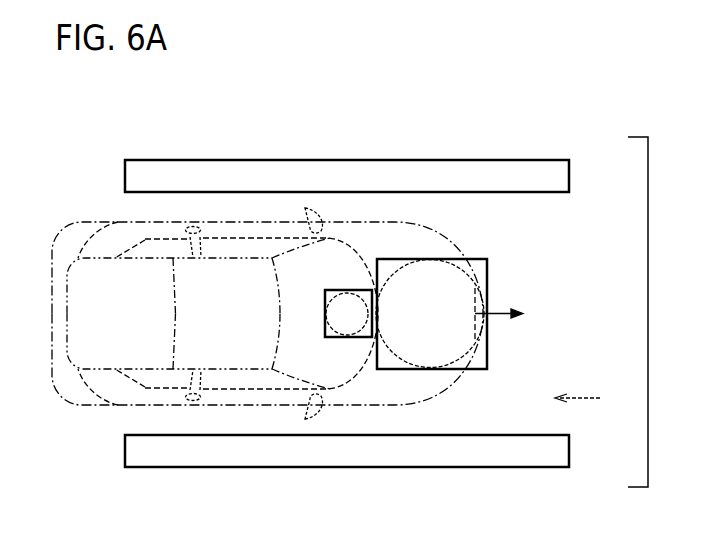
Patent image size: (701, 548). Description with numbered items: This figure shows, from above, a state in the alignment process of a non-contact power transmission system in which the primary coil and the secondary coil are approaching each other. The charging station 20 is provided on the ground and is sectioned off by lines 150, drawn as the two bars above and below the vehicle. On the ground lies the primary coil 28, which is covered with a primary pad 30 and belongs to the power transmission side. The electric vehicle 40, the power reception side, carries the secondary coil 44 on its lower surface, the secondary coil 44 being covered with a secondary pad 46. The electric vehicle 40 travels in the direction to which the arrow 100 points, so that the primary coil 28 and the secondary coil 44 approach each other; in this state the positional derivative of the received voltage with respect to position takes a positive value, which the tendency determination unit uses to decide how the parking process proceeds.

The charging station 20 is at (590, 399).
The primary coil 28 is at (447, 353).
The primary pad 30 is at (413, 259).
The electric vehicle 40 is at (101, 222).
The secondary coil 44 is at (343, 317).
The secondary pad 46 is at (325, 296).
The arrow 100 is at (498, 312).
The lines 150 is at (243, 160).